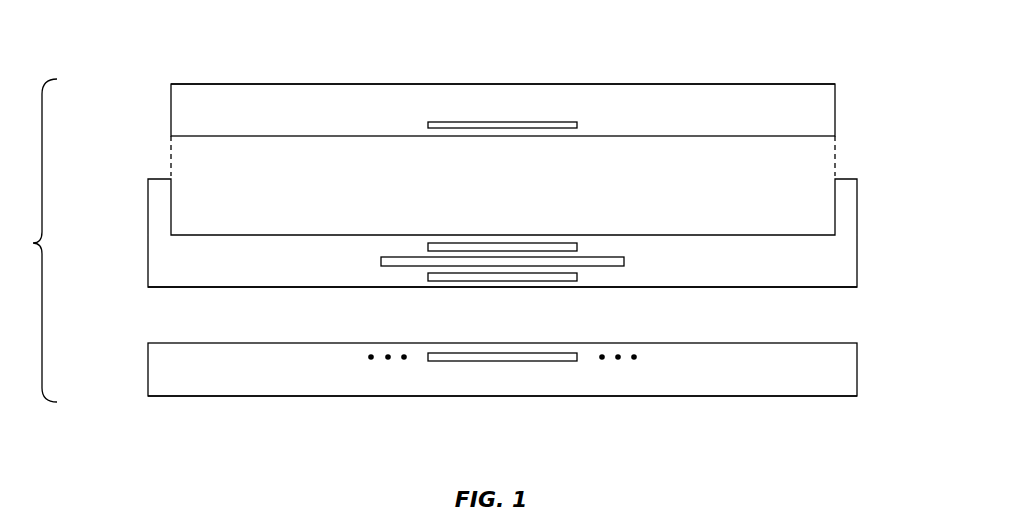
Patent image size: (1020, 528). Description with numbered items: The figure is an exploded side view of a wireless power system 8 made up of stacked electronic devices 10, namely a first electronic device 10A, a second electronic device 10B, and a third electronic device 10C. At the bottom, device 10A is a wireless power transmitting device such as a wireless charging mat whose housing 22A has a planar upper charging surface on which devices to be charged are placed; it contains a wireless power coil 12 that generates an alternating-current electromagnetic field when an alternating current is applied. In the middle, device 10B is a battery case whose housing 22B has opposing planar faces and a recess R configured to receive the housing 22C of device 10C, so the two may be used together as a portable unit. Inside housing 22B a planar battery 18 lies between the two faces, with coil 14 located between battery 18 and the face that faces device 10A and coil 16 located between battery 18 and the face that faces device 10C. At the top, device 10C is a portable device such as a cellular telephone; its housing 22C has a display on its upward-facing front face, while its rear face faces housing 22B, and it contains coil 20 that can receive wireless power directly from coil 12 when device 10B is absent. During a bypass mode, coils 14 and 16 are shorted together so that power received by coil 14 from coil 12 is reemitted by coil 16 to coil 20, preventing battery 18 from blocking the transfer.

The wireless power system 8 is at (37, 240).
The electronic device 10 is at (156, 110).
The first electronic device 10A is at (857, 367).
The second electronic device 10B is at (857, 255).
The third electronic device 10C is at (835, 104).
The wireless power coil 12 is at (500, 361).
The wireless power coil 14 is at (560, 281).
The wireless power coil 16 is at (553, 243).
The battery 18 is at (624, 260).
The wireless power coil 20 is at (470, 128).
The housing 22A is at (725, 397).
The housing 22B is at (722, 287).
The housing 22C is at (707, 83).
The recess R is at (800, 191).